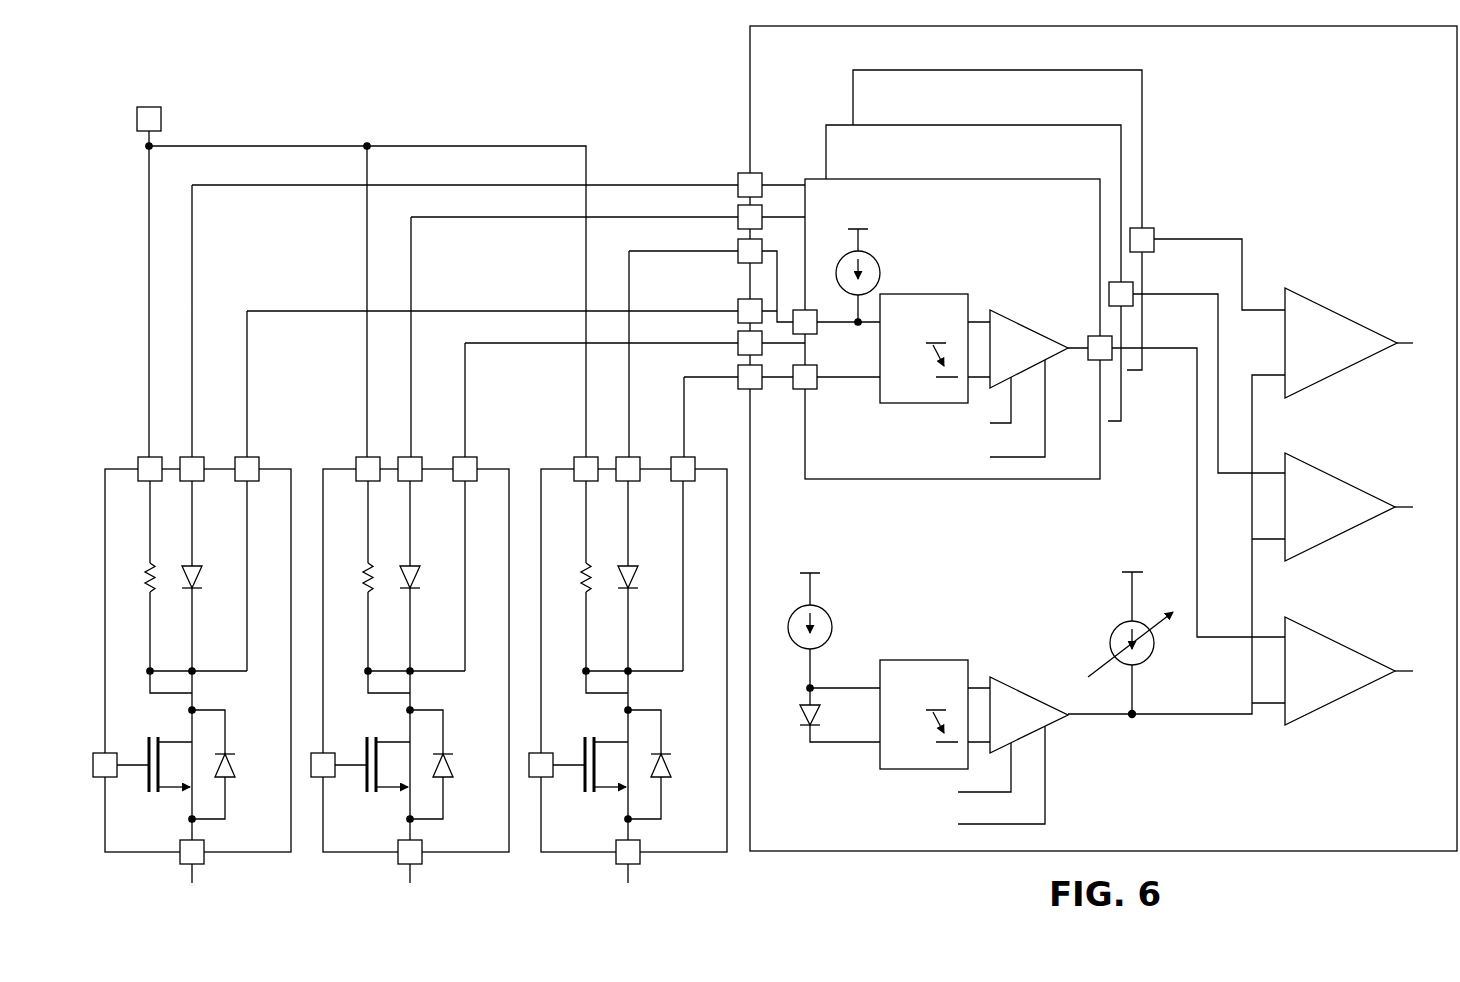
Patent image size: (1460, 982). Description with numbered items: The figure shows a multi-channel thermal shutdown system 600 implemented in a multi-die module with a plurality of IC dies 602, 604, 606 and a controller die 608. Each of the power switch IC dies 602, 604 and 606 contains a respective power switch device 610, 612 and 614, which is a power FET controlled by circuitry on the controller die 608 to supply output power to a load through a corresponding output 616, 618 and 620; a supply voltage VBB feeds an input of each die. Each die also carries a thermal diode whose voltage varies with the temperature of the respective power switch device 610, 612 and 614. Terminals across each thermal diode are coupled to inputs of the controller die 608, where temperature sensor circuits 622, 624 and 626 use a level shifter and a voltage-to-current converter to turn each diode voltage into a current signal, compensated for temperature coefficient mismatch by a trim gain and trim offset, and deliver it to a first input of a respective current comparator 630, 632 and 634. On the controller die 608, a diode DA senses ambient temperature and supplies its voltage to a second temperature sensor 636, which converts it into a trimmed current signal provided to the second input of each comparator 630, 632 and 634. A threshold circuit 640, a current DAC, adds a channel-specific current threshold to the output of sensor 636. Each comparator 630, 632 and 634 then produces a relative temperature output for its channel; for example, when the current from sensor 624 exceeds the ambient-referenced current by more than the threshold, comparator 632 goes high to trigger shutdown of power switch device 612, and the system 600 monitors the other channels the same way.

The multi-channel thermal shutdown system 600 is at (609, 77).
The IC die 602 is at (626, 649).
The IC die 604 is at (408, 649).
The IC die 606 is at (136, 462).
The controller die 608 is at (1274, 166).
The power switch device 610 is at (590, 795).
The power switch device 612 is at (372, 795).
The power switch device 614 is at (152, 773).
The output 616 is at (594, 866).
The output 618 is at (376, 866).
The output 620 is at (181, 864).
The temperature sensor circuit 622 is at (946, 223).
The temperature sensor circuit 624 is at (969, 169).
The temperature sensor circuit 626 is at (996, 115).
The current comparator 630 is at (1352, 692).
The current comparator 632 is at (1352, 528).
The current comparator 634 is at (1352, 322).
The second temperature sensor 636 is at (1060, 722).
The threshold circuit 640 is at (1102, 578).